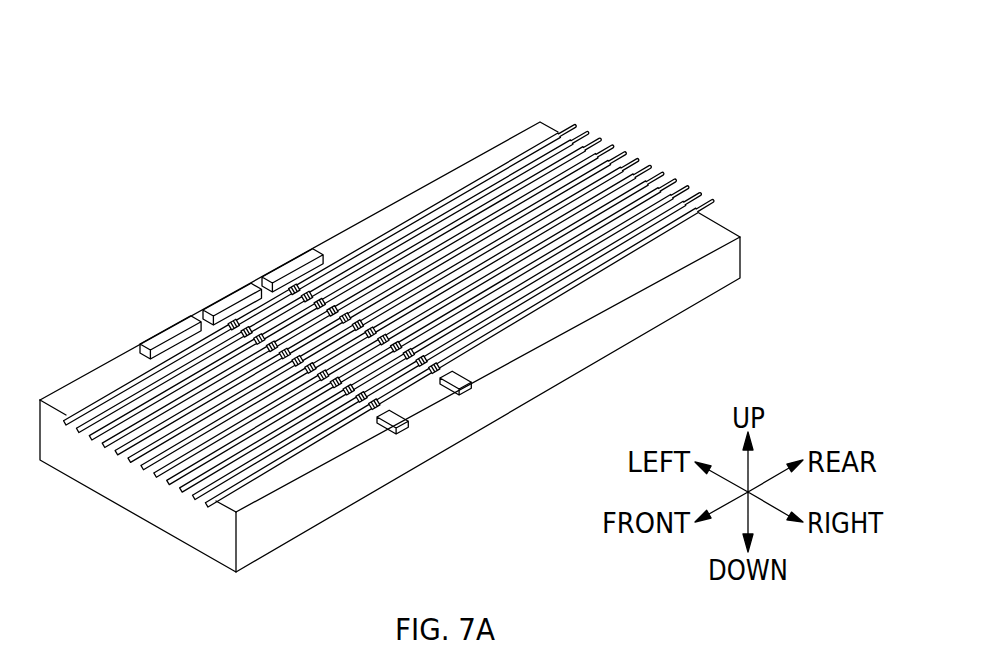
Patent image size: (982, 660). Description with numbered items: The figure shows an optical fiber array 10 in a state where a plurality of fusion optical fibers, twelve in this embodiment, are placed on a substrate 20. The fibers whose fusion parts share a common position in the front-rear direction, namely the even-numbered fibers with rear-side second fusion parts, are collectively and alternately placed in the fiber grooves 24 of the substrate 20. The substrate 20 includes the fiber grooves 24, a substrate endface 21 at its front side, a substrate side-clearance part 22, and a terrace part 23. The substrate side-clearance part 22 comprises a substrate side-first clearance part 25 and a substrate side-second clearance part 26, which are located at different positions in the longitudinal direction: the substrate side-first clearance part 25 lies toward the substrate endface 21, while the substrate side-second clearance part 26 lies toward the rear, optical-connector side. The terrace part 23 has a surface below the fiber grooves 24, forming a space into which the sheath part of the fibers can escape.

The optical fiber array 10 is at (214, 146).
The substrate 20 is at (335, 488).
The substrate endface 21 is at (213, 540).
The substrate side-clearance part 22 is at (577, 478).
The terrace part 23 is at (603, 300).
The fiber grooves 24 is at (130, 558).
The substrate side-first clearance part 25 is at (413, 428).
The substrate side-second clearance part 26 is at (460, 387).